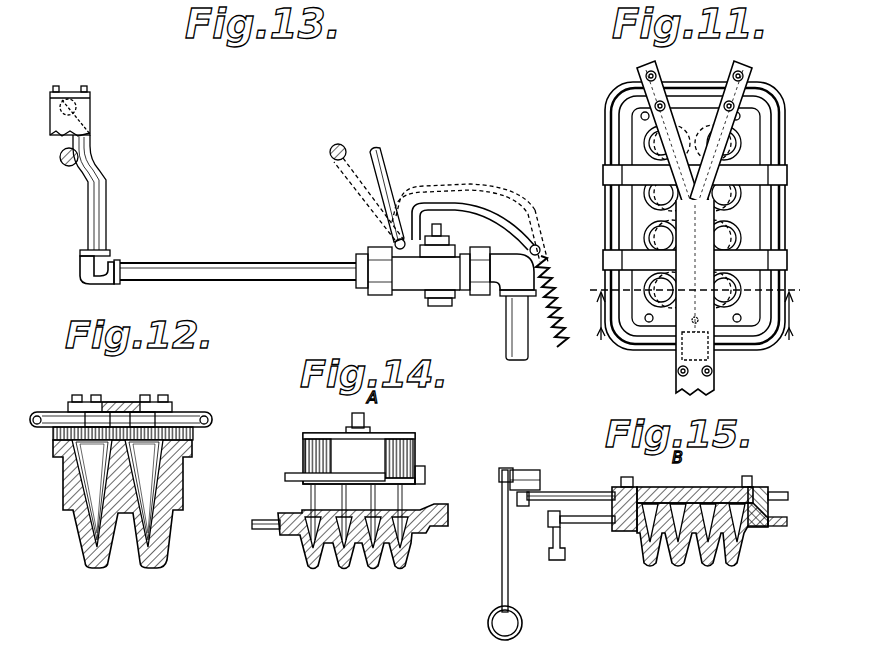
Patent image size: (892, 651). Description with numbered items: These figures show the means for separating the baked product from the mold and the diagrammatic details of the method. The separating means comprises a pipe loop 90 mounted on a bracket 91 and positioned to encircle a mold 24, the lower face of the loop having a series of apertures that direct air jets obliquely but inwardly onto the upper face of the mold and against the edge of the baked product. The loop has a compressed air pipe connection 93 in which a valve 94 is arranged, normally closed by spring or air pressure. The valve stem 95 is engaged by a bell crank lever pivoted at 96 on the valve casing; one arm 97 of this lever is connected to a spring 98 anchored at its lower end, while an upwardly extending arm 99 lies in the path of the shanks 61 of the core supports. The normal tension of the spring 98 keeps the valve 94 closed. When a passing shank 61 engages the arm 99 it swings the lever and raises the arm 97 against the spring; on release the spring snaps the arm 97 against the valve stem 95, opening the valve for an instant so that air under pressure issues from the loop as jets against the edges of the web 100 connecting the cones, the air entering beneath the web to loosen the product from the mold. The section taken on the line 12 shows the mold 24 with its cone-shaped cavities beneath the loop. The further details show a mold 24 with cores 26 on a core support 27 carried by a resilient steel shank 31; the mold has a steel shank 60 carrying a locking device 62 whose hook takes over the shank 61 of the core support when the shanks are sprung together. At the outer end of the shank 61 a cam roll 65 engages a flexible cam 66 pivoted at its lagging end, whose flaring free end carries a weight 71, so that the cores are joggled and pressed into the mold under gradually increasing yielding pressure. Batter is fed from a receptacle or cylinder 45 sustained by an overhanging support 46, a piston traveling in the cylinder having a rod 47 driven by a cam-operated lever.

In FIG. 11, the section line 12 is at (691, 335).
In FIG. 12, the mold 24 is at (70, 493).
In FIG. 14, the mold 24 is at (418, 536).
In FIG. 15, the mold 24 is at (750, 530).
In FIG. 15, the core 26 is at (647, 499).
In FIG. 15, the core support 27 is at (700, 488).
In FIG. 15, the steel shank 31 is at (770, 492).
In FIG. 14, the receptacle or cylinder 45 is at (416, 456).
In FIG. 14, the overhanging support 46 is at (292, 474).
In FIG. 14, the piston rod 47 is at (366, 426).
In FIG. 14, the steel shank 60 is at (270, 528).
In FIG. 15, the steel shank 60 is at (587, 524).
In FIG. 13, the steel shank 61 is at (61, 162).
In FIG. 15, the steel shank 61 is at (571, 492).
In FIG. 15, the locking device 62 is at (555, 546).
In FIG. 15, the cam roll 65 is at (516, 500).
In FIG. 15, the cam 66 is at (524, 472).
In FIG. 15, the weight 71 is at (522, 622).
In FIG. 11, the pipe loop 90 is at (610, 110).
In FIG. 12, the pipe loop 90 is at (54, 412).
In FIG. 13, the bracket 91 is at (66, 90).
In FIG. 11, the bracket 91 is at (735, 67).
In FIG. 12, the bracket 91 is at (120, 403).
In FIG. 13, the compressed air pipe connection 93 is at (100, 208).
In FIG. 11, the compressed air pipe connection 93 is at (716, 383).
In FIG. 13, the valve 94 is at (432, 271).
In FIG. 13, the valve stem 95 is at (442, 224).
In FIG. 13, the pivot 96 is at (392, 244).
In FIG. 13, the arm of bell crank lever 97 is at (497, 216).
In FIG. 13, the spring 98 is at (548, 288).
In FIG. 13, the upwardly extending arm 99 is at (377, 148).
In FIG. 11, the web 100 is at (638, 213).
In FIG. 12, the web 100 is at (192, 435).